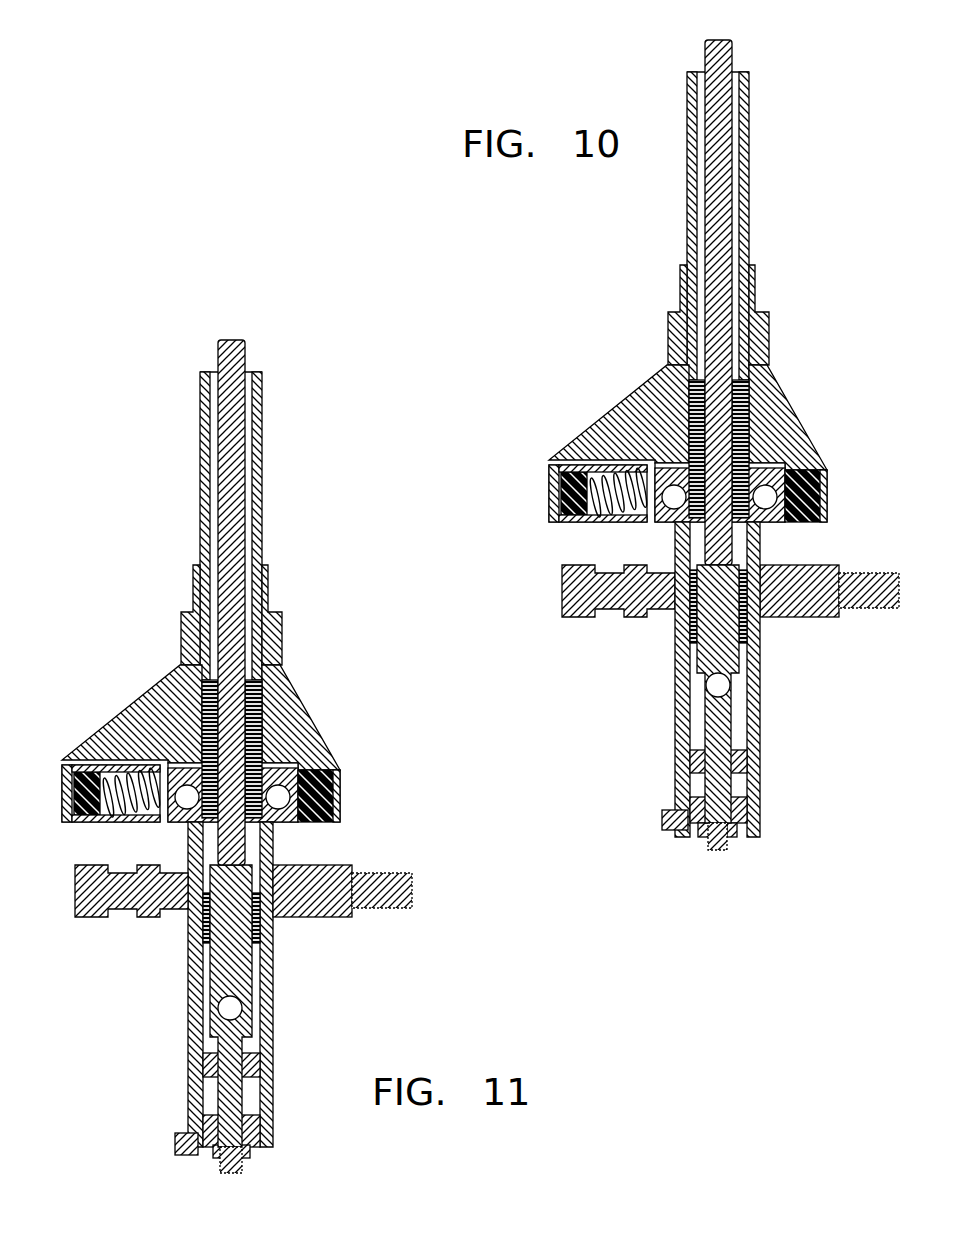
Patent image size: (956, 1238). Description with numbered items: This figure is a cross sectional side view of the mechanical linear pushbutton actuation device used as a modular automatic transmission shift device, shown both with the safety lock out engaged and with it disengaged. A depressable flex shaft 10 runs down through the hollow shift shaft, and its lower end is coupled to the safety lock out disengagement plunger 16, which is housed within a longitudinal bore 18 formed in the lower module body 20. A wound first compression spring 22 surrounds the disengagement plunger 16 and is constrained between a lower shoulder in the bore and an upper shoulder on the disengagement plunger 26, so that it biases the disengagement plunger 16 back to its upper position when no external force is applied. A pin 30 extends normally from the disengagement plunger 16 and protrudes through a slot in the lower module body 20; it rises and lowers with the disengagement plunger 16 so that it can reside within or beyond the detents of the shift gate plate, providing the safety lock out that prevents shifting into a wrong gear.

In FIG. 11, the flex shaft 10 is at (237, 340).
In FIG. 11, the safety lock out disengagement plunger 16 is at (233, 972).
In FIG. 11, the longitudinal bore 18 is at (207, 1040).
In FIG. 11, the lower module body 20 is at (188, 1107).
In FIG. 11, the first compression spring 22 is at (200, 928).
In FIG. 11, the upper shoulder on the disengagement plunger 26 is at (273, 855).
In FIG. 10, the pin 30 is at (663, 825).